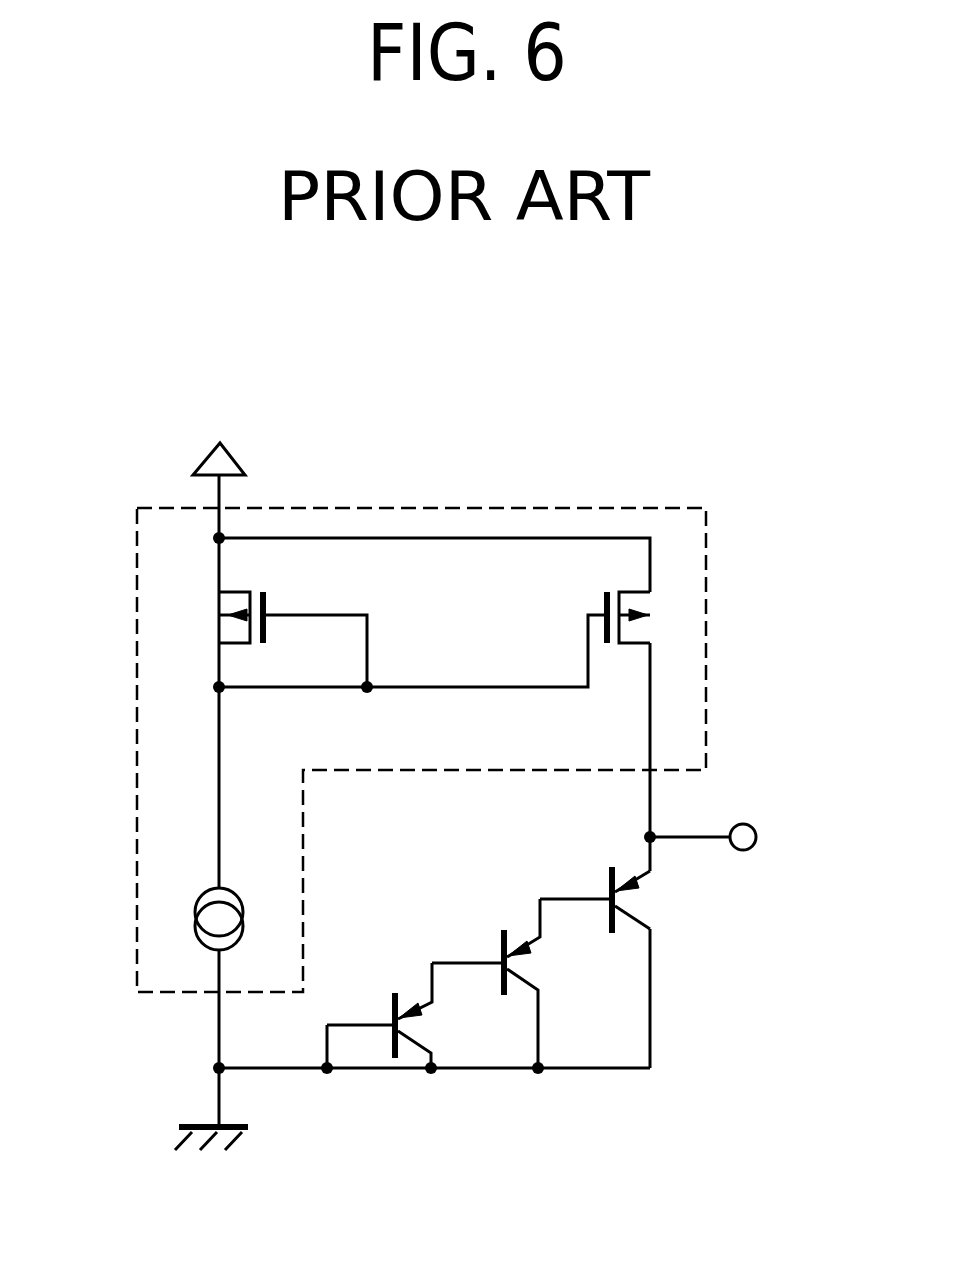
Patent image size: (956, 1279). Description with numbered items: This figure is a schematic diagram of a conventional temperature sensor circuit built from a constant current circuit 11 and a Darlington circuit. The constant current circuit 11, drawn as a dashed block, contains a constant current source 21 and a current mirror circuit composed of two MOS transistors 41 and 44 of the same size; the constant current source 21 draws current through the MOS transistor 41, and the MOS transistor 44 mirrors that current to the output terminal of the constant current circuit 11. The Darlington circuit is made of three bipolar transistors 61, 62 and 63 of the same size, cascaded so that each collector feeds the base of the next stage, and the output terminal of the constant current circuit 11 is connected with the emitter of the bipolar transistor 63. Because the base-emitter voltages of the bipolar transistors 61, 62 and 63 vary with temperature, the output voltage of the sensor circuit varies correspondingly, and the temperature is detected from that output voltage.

The constant current circuit 11 is at (707, 657).
The constant current source 21 is at (207, 893).
The MOS transistor 41 is at (212, 628).
The MOS transistor 44 is at (663, 620).
The bipolar transistor 61 is at (408, 1055).
The bipolar transistor 62 is at (517, 997).
The bipolar transistor 63 is at (643, 893).